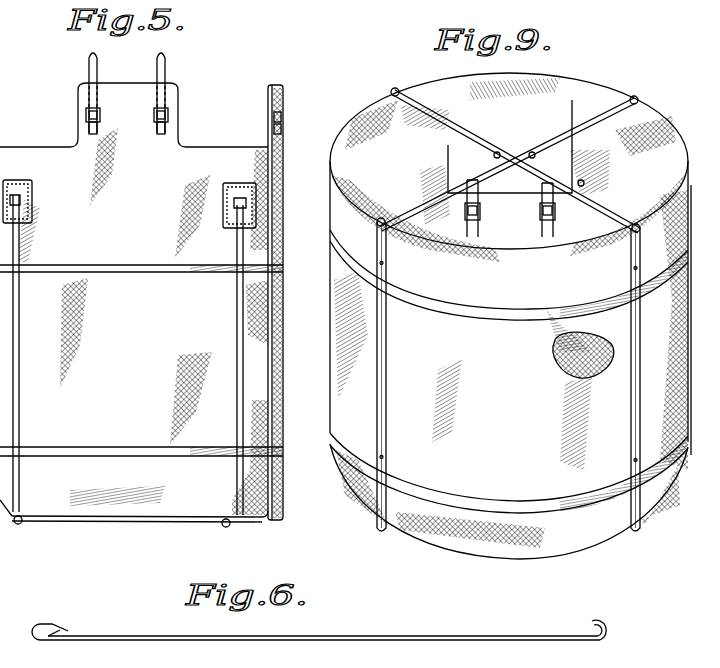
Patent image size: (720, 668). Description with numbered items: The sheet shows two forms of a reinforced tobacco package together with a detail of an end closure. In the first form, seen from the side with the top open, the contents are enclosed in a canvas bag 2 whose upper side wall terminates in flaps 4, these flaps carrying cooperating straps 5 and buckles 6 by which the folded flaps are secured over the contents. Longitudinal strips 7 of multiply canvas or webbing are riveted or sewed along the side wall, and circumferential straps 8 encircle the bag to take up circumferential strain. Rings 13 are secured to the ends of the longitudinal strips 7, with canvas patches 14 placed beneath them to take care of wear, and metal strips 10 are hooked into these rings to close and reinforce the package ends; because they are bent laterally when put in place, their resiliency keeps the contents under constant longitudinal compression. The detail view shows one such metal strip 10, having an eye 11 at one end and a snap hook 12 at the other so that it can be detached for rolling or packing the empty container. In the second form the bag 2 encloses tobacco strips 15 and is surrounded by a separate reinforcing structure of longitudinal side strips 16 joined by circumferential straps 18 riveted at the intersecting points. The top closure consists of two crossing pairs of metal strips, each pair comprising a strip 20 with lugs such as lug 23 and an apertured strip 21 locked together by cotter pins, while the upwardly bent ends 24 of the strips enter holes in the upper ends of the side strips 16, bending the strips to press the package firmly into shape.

In FIG. 5, the bag 2 is at (141, 301).
In FIG. 9, the bag 2 is at (600, 215).
In FIG. 5, the flaps 4 is at (0, 102).
In FIG. 9, the flaps 4 is at (450, 146).
In FIG. 5, the straps 5 is at (0, 66).
In FIG. 9, the straps 5 is at (542, 190).
In FIG. 5, the buckles 6 is at (86, 115).
In FIG. 9, the buckles 6 is at (540, 213).
In FIG. 5, the longitudinal strips 7 is at (19, 400).
In FIG. 5, the circumferential straps 8 is at (101, 270).
In FIG. 5, the metal strips 10 is at (91, 523).
In FIG. 6, the metal strips 10 is at (441, 636).
In FIG. 6, the eye 11 is at (610, 624).
In FIG. 6, the snap hook 12 is at (66, 626).
In FIG. 5, the rings 13 is at (15, 193).
In FIG. 5, the canvas patches 14 is at (33, 208).
In FIG. 5, the tobacco strips 15 is at (17, 526).
In FIG. 9, the side strips 16 is at (385, 422).
In FIG. 9, the circumferential straps 18 is at (455, 302).
In FIG. 9, the strip 20 is at (500, 140).
In FIG. 9, the strip 21 is at (404, 188).
In FIG. 9, the lug 23 is at (583, 181).
In FIG. 9, the bent ends 24 is at (377, 228).